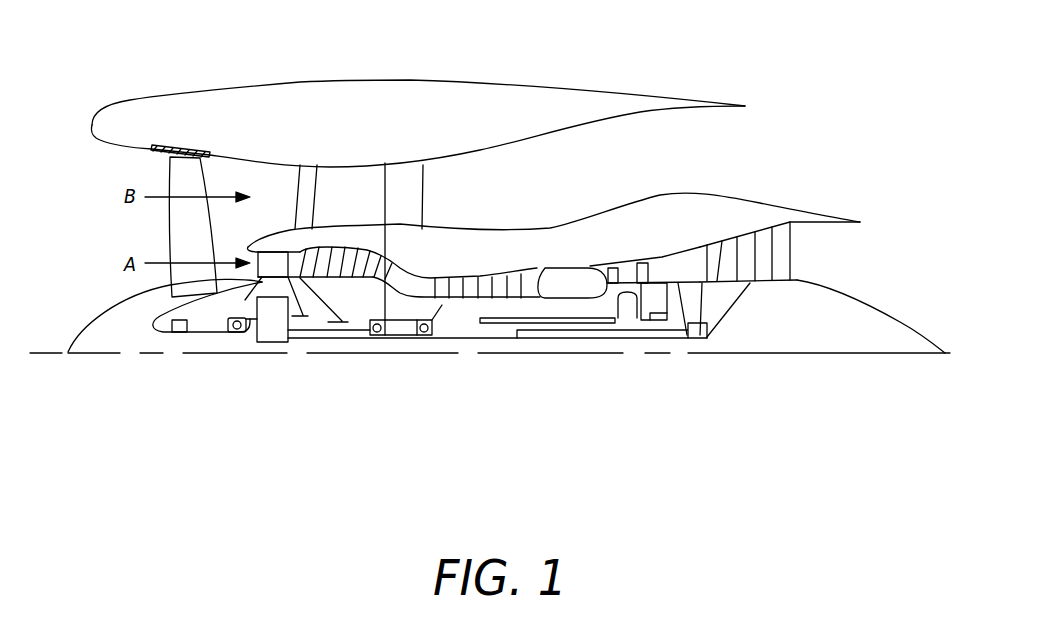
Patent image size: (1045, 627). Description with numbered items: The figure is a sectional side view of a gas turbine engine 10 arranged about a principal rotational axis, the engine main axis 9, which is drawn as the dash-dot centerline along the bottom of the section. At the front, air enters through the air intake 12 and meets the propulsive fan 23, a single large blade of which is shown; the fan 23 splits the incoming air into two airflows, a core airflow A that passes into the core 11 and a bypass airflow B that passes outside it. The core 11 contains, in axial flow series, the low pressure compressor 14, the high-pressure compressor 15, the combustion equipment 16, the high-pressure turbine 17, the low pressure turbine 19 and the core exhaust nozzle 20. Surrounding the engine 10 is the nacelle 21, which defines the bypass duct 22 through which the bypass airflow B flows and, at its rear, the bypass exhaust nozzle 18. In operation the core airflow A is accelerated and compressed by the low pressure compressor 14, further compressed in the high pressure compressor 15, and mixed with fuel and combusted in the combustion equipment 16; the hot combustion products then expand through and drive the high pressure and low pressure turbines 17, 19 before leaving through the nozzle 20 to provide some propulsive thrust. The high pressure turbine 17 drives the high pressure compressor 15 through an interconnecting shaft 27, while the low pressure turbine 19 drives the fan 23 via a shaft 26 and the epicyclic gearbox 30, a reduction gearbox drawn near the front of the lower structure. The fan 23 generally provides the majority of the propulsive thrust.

The engine main axis 9 is at (742, 354).
The gas turbine engine 10 is at (172, 98).
The core 11 is at (535, 248).
The air intake 12 is at (151, 250).
The low pressure compressor 14 is at (342, 253).
The high-pressure compressor 15 is at (485, 287).
The combustion equipment 16 is at (565, 288).
The high-pressure turbine 17 is at (627, 272).
The bypass exhaust nozzle 18 is at (740, 148).
The low pressure turbine 19 is at (763, 240).
The core exhaust nozzle 20 is at (836, 252).
The nacelle 21 is at (399, 92).
The bypass duct 22 is at (690, 163).
The propulsive fan 23 is at (173, 230).
The shaft 26 is at (482, 340).
The interconnecting shaft 27 is at (533, 327).
The epicyclic gearbox 30 is at (272, 333).